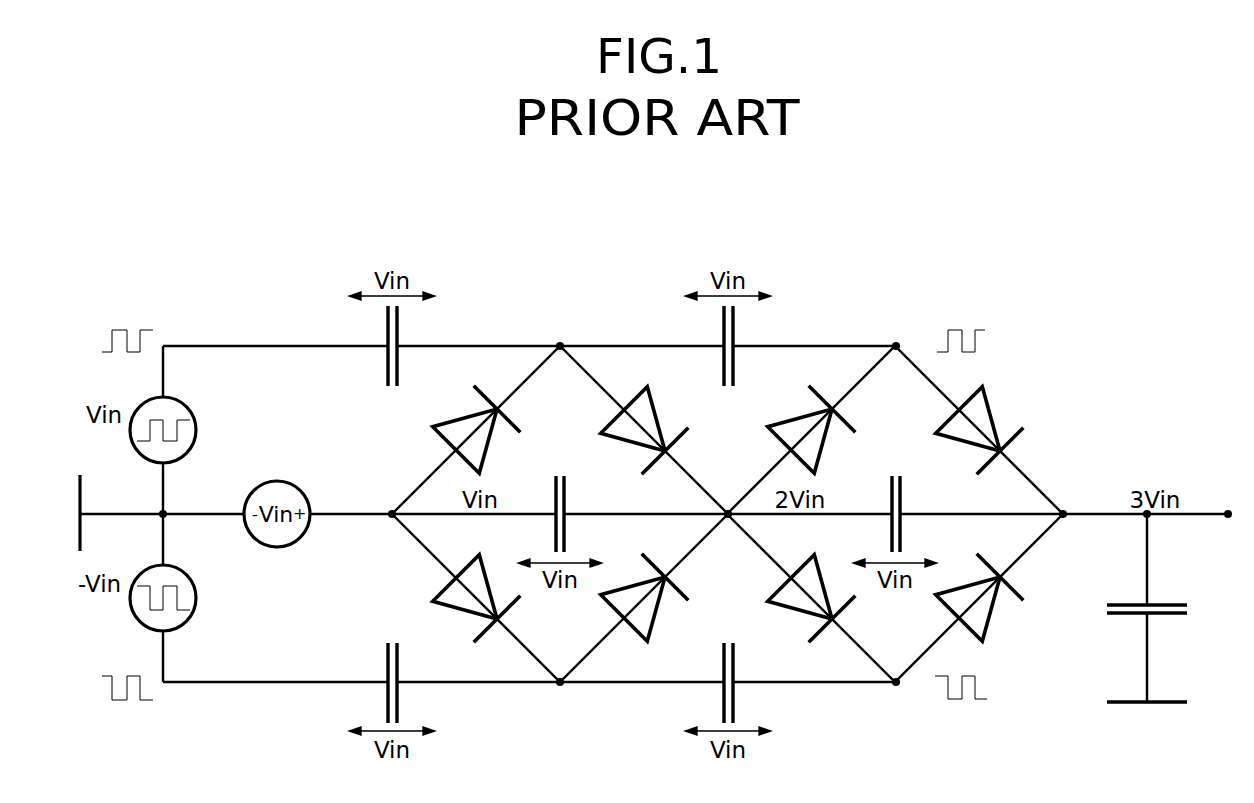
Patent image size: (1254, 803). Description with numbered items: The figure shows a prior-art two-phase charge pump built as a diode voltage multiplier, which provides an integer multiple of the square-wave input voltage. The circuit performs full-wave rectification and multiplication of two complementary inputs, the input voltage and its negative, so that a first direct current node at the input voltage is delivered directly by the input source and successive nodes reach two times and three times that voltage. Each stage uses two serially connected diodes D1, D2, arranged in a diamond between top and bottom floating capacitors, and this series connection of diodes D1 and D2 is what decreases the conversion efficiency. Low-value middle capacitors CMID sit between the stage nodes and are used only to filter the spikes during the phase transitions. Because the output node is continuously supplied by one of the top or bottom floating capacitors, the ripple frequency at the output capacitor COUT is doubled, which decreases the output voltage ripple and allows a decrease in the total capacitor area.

The diode D1 is at (644, 512).
The diode D2 is at (812, 512).
The middle capacitor CMID is at (720, 496).
The output capacitor COUT is at (1176, 608).